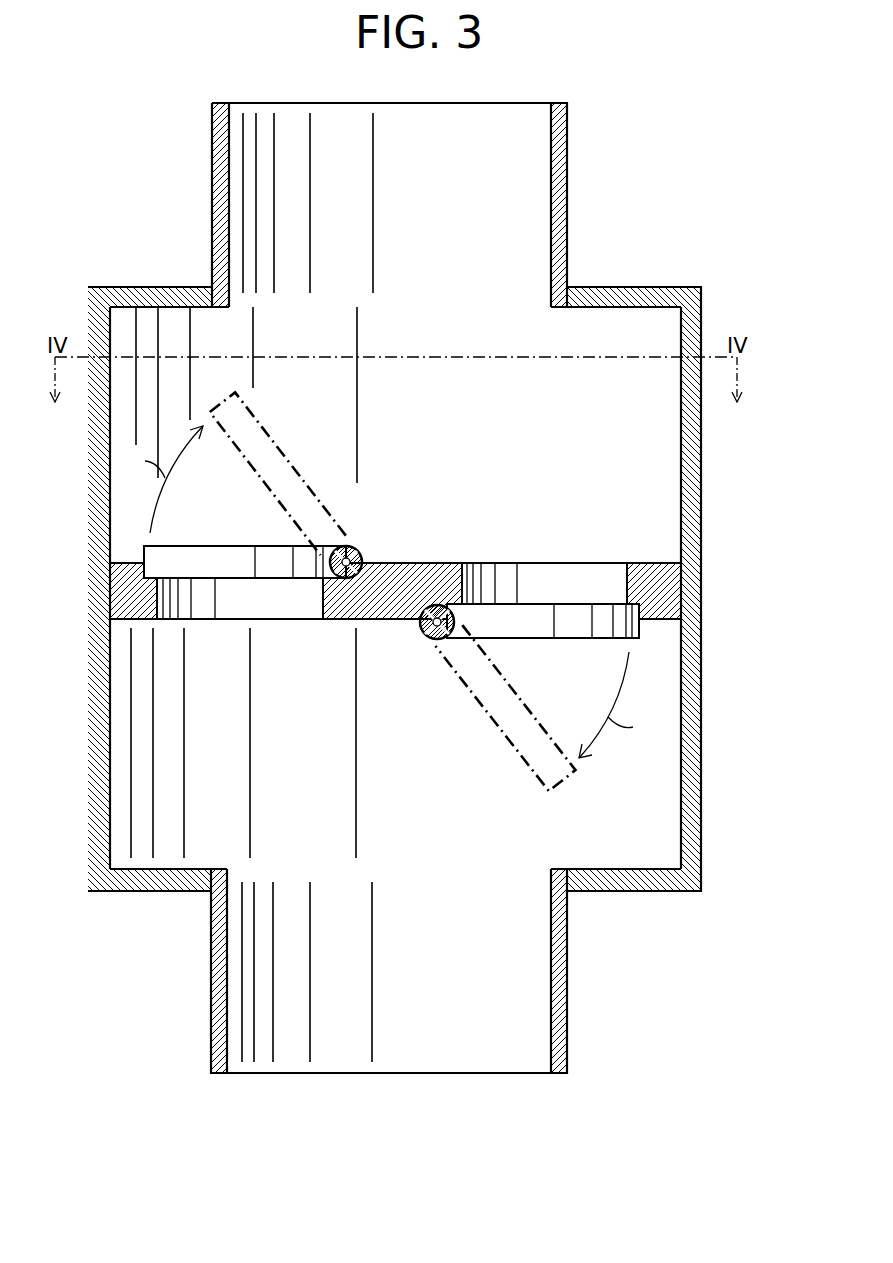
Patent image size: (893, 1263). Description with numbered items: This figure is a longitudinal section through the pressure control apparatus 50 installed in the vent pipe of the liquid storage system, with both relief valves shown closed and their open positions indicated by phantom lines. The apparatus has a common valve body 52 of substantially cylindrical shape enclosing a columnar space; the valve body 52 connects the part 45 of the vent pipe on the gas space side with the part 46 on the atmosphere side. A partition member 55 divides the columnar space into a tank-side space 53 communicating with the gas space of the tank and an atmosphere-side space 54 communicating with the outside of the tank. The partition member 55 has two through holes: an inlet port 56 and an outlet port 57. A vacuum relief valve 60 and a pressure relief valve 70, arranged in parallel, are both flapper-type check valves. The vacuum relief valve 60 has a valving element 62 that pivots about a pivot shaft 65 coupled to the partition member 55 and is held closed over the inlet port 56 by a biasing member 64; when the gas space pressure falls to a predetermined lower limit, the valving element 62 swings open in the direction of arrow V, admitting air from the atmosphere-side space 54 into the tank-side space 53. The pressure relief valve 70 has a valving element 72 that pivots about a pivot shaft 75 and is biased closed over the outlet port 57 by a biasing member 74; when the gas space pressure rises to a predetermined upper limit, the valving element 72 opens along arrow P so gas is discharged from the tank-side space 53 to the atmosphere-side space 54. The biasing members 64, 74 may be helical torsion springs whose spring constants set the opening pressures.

The part of the vent pipe on the gas space side 45 is at (562, 990).
The part of the vent pipe on the atmosphere side 46 is at (212, 212).
The pressure control apparatus 50 is at (373, 588).
The valve body 52 is at (90, 647).
The tank-side space 53 is at (380, 803).
The atmosphere-side space 54 is at (388, 414).
The partition member 55 is at (401, 572).
The inlet port 56 is at (547, 572).
The outlet port 57 is at (270, 610).
The vacuum relief valve 60 is at (472, 713).
The valving element 62 is at (572, 632).
The biasing member 64 is at (428, 603).
The pivot shaft 65 is at (439, 619).
The pressure relief valve 70 is at (328, 462).
The valving element 72 is at (221, 556).
The biasing member 74 is at (349, 582).
The pivot shaft 75 is at (345, 566).